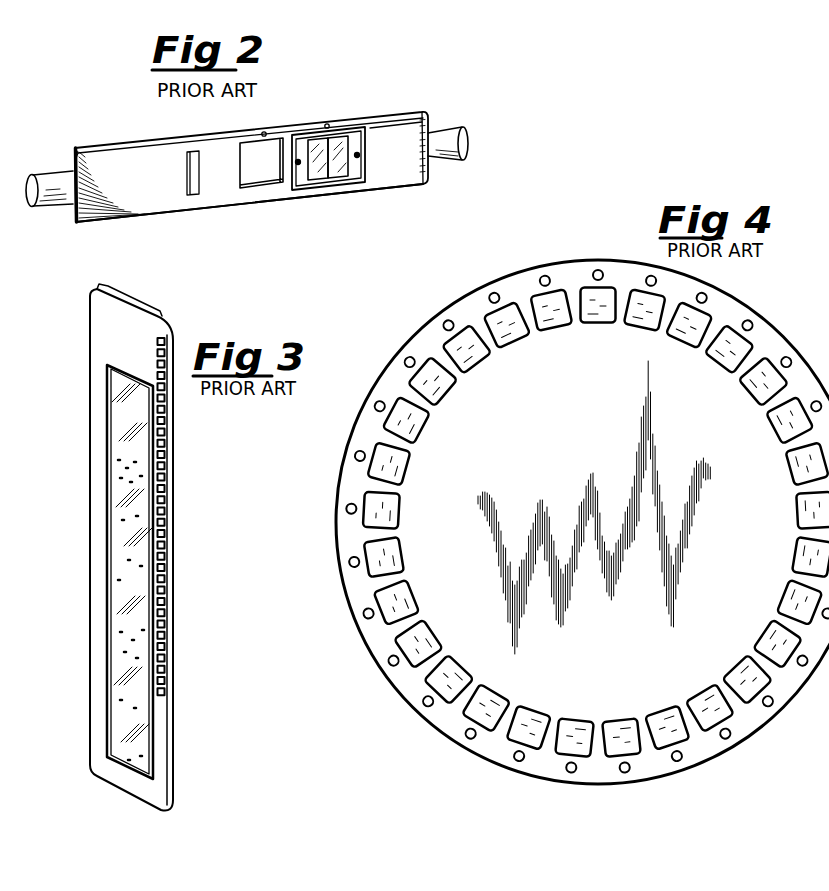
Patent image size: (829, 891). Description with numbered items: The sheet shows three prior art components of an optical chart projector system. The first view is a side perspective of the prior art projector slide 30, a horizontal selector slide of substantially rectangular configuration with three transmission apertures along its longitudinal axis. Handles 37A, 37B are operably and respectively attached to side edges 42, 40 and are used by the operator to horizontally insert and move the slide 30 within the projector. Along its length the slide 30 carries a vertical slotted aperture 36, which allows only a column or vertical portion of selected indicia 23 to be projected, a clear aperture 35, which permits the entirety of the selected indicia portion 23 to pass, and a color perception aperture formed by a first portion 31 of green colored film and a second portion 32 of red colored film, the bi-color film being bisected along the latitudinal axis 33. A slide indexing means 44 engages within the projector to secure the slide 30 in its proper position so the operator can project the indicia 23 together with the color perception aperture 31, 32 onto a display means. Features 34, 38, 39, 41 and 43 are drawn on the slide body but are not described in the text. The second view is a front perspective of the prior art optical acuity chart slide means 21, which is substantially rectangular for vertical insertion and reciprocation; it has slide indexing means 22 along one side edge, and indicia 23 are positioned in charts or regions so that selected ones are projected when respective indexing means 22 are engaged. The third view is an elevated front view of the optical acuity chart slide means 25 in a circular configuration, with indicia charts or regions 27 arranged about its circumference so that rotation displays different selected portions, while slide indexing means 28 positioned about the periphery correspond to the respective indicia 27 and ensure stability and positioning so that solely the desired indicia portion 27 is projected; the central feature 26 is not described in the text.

In FIG. 3, the optical acuity chart slide means 21 is at (157, 306).
In FIG. 3, the slide indexing means 22 is at (166, 451).
In FIG. 3, the indicia 23 is at (118, 419).
In FIG. 4, the optical acuity chart slide means 25 is at (405, 722).
In FIG. 4, the sound waveform 26 is at (578, 495).
In FIG. 4, the indicia charts or regions 27 is at (598, 324).
In FIG. 4, the slide indexing means 28 is at (544, 271).
In FIG. 2, the prior art projector slide 30 is at (435, 97).
In FIG. 2, the first portion 31 is at (320, 173).
In FIG. 2, the second portion 32 is at (343, 173).
In FIG. 2, the latitudinal axis 33 is at (327, 178).
In FIG. 2, the body surface 34 is at (410, 172).
In FIG. 2, the clear aperture 35 is at (254, 180).
In FIG. 2, the vertical slotted aperture 36 is at (193, 152).
In FIG. 2, the handle 37A is at (468, 141).
In FIG. 2, the handle 37B is at (41, 181).
In FIG. 2, the top edge 38 is at (141, 144).
In FIG. 2, the top left corner edge 39 is at (100, 147).
In FIG. 2, the side edge 40 is at (73, 216).
In FIG. 2, the bottom edge 41 is at (153, 215).
In FIG. 2, the side edge 42 is at (432, 122).
In FIG. 2, the pin 43 is at (264, 132).
In FIG. 2, the slide indexing means 44 is at (327, 124).